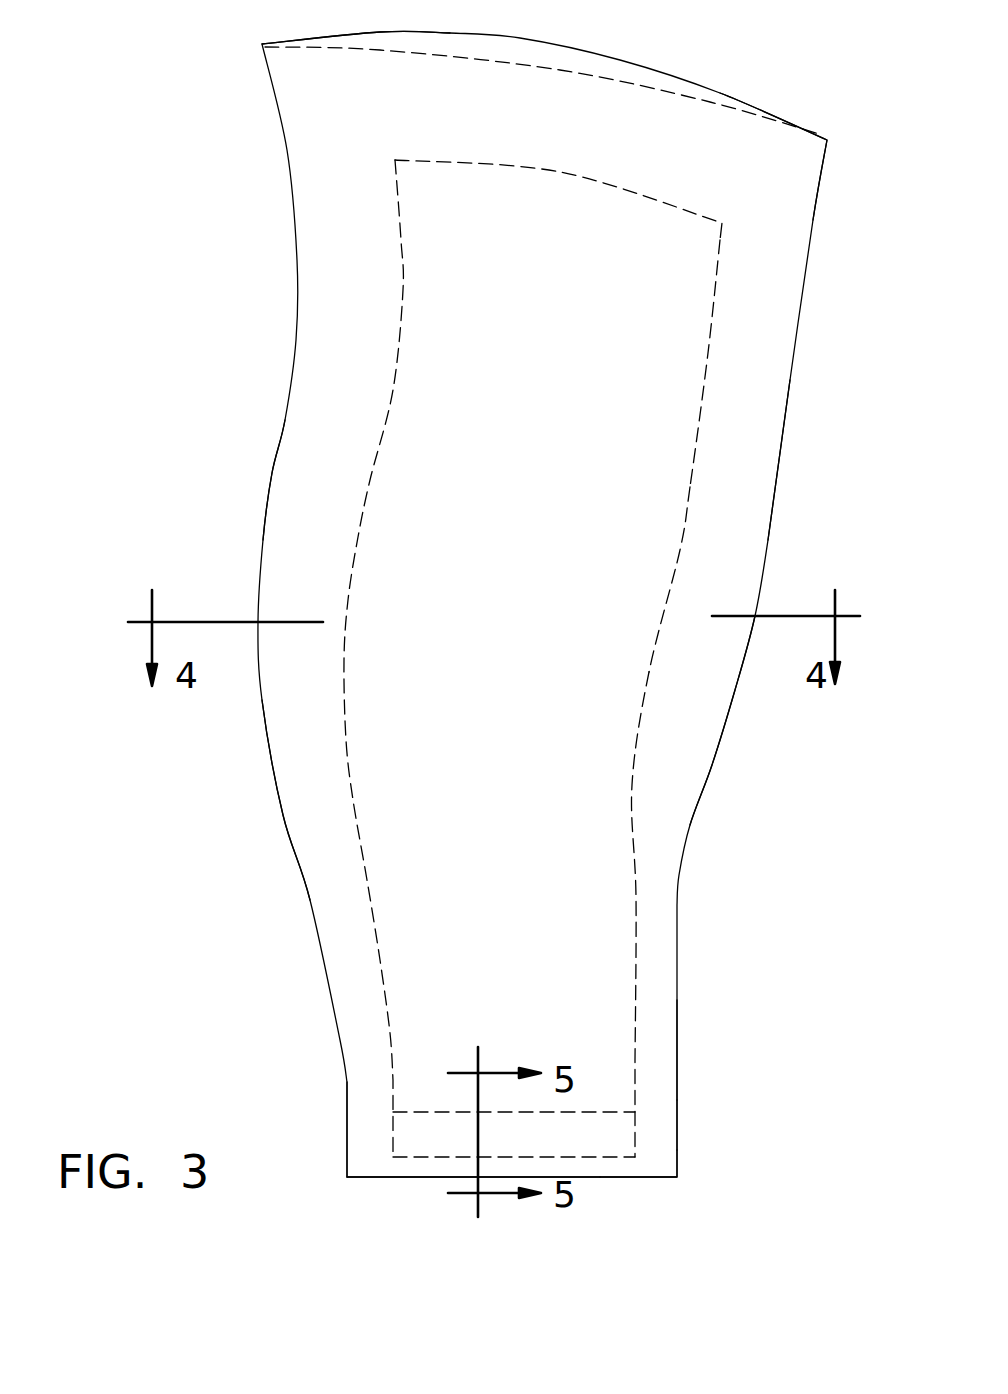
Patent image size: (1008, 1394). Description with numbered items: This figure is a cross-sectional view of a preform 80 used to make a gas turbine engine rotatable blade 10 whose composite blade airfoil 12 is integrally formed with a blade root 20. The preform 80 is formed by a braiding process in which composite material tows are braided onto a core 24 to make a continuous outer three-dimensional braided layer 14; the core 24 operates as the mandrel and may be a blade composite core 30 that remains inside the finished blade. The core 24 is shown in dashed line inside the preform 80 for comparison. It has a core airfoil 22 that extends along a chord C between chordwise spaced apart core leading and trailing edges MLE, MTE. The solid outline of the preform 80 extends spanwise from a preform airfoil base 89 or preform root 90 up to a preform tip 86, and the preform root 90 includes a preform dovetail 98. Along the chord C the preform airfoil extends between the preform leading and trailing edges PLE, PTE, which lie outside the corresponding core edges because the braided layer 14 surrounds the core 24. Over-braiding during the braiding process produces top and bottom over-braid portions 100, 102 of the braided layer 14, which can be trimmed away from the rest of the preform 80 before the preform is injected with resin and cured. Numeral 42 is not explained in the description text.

The gas turbine engine rotatable blade 10 is at (210, 970).
The composite blade airfoil 12 is at (677, 1048).
The continuous outer three-dimensional braided layer 14 is at (307, 798).
The blade root 20 is at (677, 1120).
The core airfoil 22 is at (637, 453).
The core 24 is at (655, 368).
The blade composite core 30 is at (722, 252).
The bottom ply 42 is at (565, 1158).
The preform 80 is at (745, 744).
The preform tip 86 is at (283, 65).
The preform airfoil base 89 is at (424, 1178).
The preform root 90 is at (346, 1148).
The preform dovetail 98 is at (653, 1138).
The top over-braid portion 100 is at (742, 142).
The bottom over-braid portion 102 is at (625, 1165).
The chord C is at (473, 57).
The core leading edge MLE is at (393, 395).
The preform leading edge PLE is at (272, 475).
The preform trailing edge PTE is at (783, 444).
The core trailing edge MTE is at (636, 954).